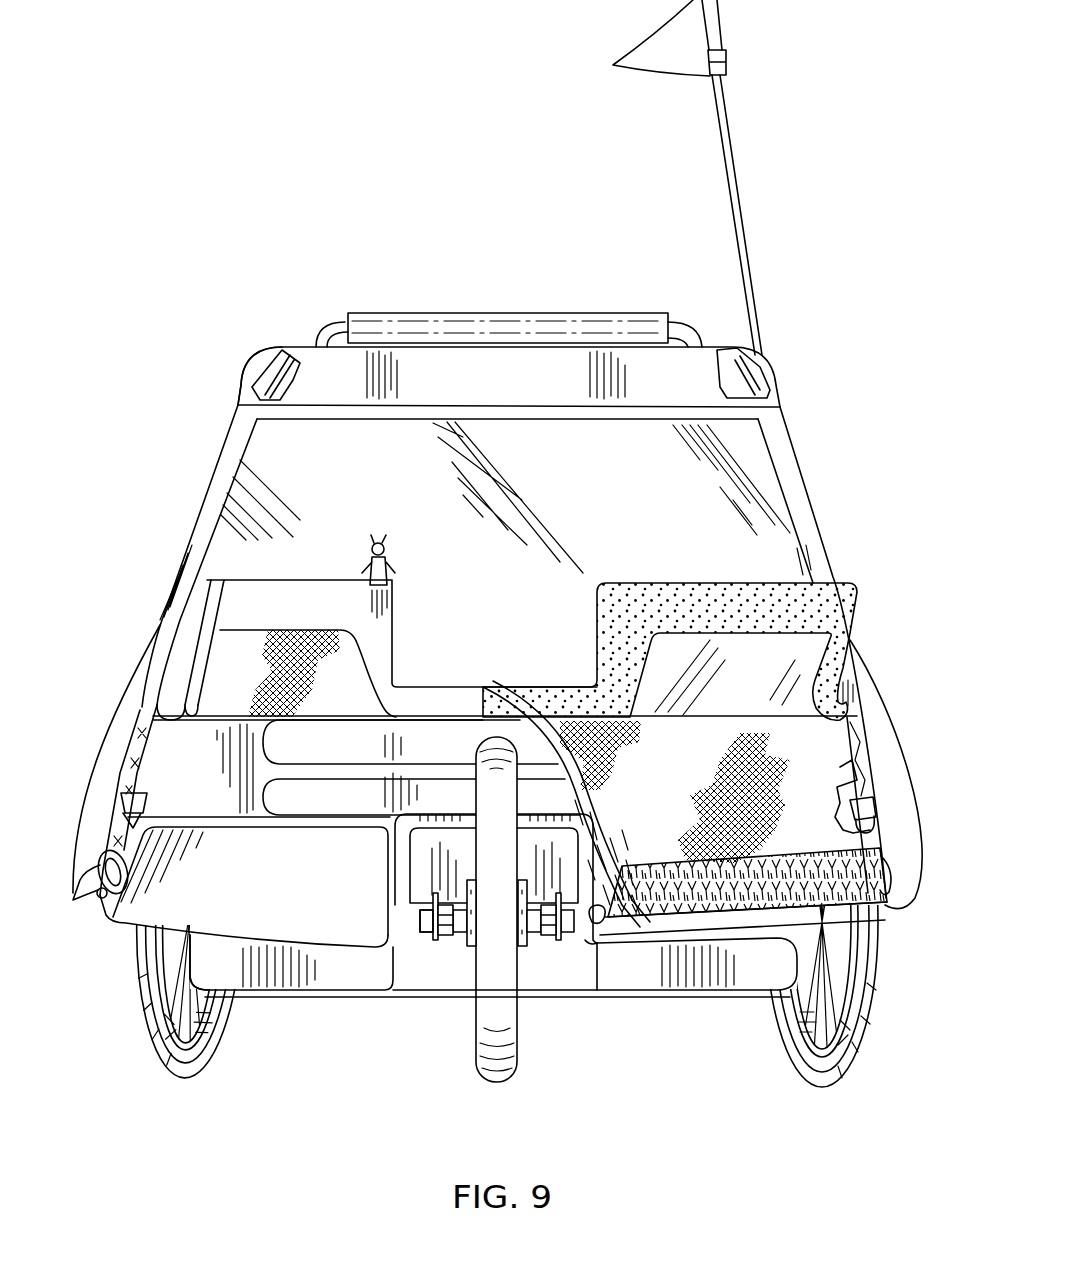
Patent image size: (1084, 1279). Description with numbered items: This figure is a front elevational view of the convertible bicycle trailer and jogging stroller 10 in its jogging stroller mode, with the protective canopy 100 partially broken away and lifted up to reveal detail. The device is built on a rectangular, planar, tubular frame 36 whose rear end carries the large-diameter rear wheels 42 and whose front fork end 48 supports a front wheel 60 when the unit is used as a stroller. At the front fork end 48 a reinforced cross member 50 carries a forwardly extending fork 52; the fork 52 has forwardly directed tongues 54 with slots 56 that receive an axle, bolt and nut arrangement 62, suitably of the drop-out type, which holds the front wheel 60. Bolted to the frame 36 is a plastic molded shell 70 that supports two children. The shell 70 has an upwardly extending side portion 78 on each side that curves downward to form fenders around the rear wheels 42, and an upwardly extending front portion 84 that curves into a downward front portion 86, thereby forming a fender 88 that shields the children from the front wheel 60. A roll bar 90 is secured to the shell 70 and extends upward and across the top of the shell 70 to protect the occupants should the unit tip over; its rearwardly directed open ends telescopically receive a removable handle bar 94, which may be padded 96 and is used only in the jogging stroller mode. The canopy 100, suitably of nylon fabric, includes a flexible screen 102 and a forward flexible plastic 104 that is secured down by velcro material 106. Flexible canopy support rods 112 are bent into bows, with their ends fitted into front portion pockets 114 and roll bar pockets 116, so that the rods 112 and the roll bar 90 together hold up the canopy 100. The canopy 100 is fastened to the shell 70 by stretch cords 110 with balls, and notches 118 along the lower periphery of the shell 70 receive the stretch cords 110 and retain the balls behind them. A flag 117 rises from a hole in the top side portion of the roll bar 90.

The convertible bicycle trailer and jogging stroller 10 is at (393, 179).
The frame 36 is at (580, 930).
The rear wheels 42 is at (183, 1078).
The front fork end 48 is at (437, 937).
The reinforced cross member 50 is at (463, 928).
The fork 52 is at (437, 937).
The tongues 54 is at (557, 930).
The slots 56 is at (560, 930).
The front wheel 60 is at (491, 1082).
The axle, bolt and nut arrangement 62 is at (590, 922).
The shell 70 is at (242, 977).
The upward side portion 78 is at (187, 778).
The upwardly extending front portion 84 is at (350, 975).
The downward front portion 86 is at (287, 927).
The fender 88 is at (407, 842).
The roll bar 90 is at (258, 369).
The handle bar 94 is at (328, 322).
The padding 96 is at (432, 318).
The protective canopy 100 is at (225, 528).
The flexible screen 102 is at (830, 742).
The forward flexible plastic 104 is at (792, 547).
The velcro material 106 is at (853, 595).
The stretch cords 110 is at (100, 860).
The canopy support rods 112 is at (133, 777).
The front portion pockets 114 is at (127, 803).
The roll bar pockets 116 is at (292, 352).
The flag 117 is at (743, 207).
The notches 118 is at (100, 903).